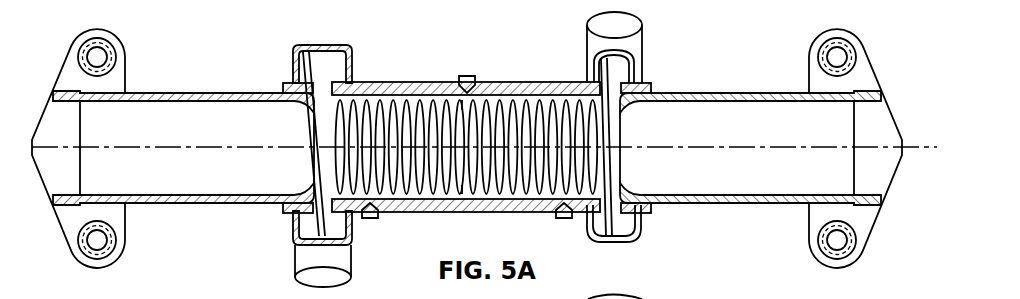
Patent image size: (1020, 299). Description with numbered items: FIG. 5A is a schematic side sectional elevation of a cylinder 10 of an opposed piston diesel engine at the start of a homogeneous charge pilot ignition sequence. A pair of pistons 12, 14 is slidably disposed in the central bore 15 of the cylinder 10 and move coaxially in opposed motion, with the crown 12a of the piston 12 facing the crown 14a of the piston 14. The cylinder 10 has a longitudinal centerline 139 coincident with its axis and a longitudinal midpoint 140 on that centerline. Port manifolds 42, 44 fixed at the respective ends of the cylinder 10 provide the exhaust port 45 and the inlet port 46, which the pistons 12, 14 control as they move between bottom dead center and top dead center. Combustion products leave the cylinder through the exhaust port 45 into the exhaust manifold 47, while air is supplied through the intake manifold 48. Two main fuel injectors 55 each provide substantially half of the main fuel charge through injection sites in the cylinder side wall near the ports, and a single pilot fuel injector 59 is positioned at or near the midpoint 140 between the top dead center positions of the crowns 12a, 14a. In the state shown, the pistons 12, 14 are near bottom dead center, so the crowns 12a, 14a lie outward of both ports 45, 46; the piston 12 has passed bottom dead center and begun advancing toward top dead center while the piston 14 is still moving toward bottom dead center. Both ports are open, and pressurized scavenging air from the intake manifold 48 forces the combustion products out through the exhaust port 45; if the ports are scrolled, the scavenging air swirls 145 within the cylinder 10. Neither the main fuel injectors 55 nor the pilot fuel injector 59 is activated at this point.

The cylinder 10 is at (378, 82).
The piston 12 is at (158, 93).
The crown 12a is at (293, 57).
The piston 14 is at (777, 92).
The crown 14a is at (614, 70).
The central bore 15 is at (492, 100).
The port manifold 42 is at (320, 46).
The port manifold 44 is at (615, 240).
The exhaust port 45 is at (318, 220).
The inlet port 46 is at (642, 224).
The exhaust manifold 47 is at (350, 284).
The intake manifold 48 is at (643, 24).
The main fuel injector 55 is at (372, 218).
The pilot fuel injector 59 is at (462, 78).
The longitudinal centerline 139 is at (232, 145).
The longitudinal midpoint 140 is at (486, 135).
The swirl 145 is at (465, 192).